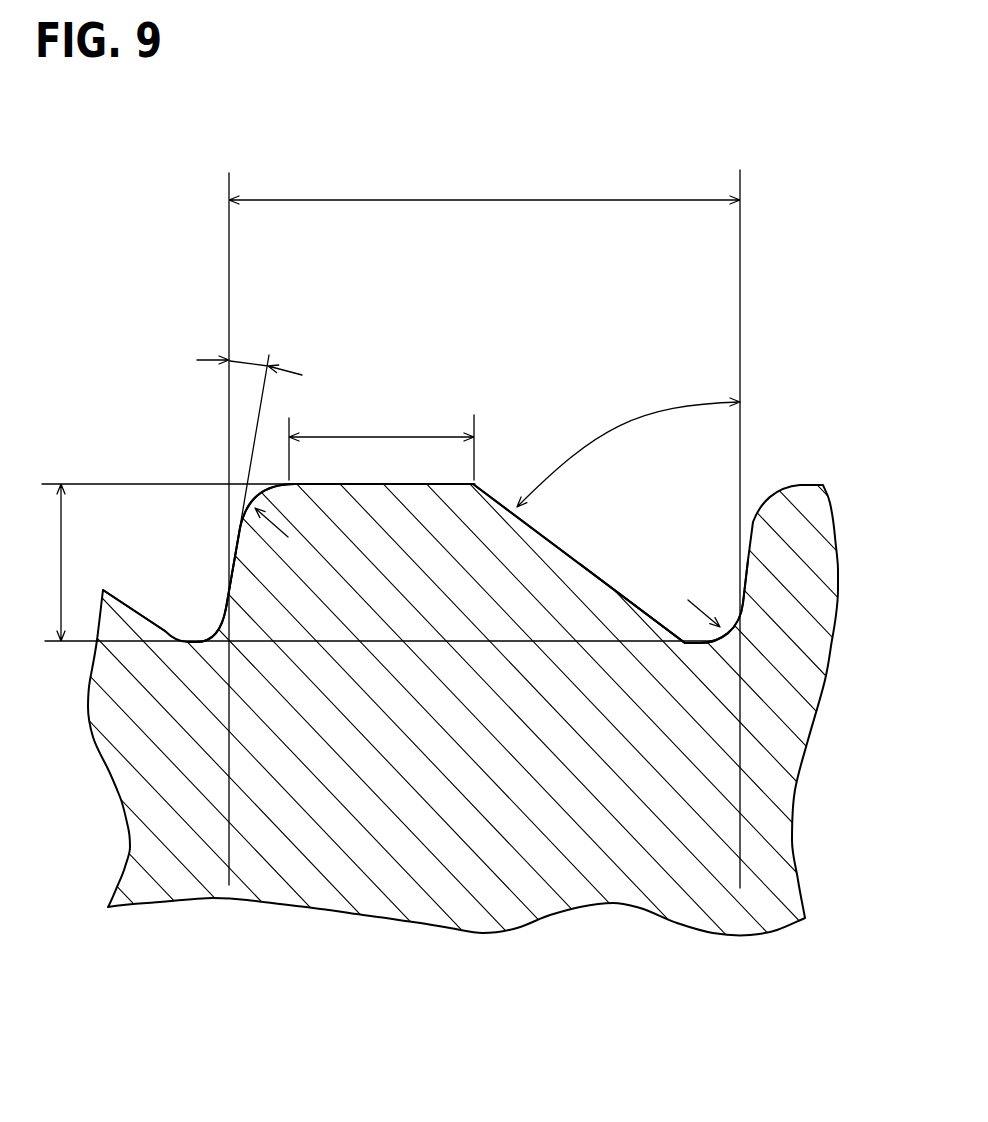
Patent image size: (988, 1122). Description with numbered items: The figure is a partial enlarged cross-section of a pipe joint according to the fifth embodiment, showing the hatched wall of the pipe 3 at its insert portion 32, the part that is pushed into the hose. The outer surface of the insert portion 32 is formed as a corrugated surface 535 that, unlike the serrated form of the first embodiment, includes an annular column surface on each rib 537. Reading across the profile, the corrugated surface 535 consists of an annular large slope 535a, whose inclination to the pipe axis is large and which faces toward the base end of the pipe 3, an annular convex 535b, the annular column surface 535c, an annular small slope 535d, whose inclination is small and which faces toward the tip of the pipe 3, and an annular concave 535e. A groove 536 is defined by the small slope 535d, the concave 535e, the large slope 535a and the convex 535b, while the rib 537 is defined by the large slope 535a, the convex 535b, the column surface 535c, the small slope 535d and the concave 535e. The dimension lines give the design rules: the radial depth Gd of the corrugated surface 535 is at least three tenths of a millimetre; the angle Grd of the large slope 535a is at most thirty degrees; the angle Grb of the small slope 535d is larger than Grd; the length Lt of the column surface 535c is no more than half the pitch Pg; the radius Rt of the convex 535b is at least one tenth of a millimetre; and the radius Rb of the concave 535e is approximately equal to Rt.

The pipe 3 is at (133, 905).
The insert portion 32 is at (177, 845).
The corrugated surface 535 is at (543, 542).
The large slope 535a is at (240, 557).
The convex 535b is at (263, 490).
The column surface 535c is at (400, 487).
The small slope 535d is at (590, 575).
The concave 535e is at (714, 641).
The groove 536 is at (672, 575).
The rib 537 is at (357, 527).
The pitch Pg is at (484, 528).
The angle of the large slope Grd is at (249, 467).
The length of the column surface Lt is at (381, 441).
The depth of the corrugated surface Gd is at (370, 562).
The angle of the small slope Grb is at (628, 452).
The radius of the convex Rt is at (258, 527).
The radius of the concave Rb is at (700, 612).